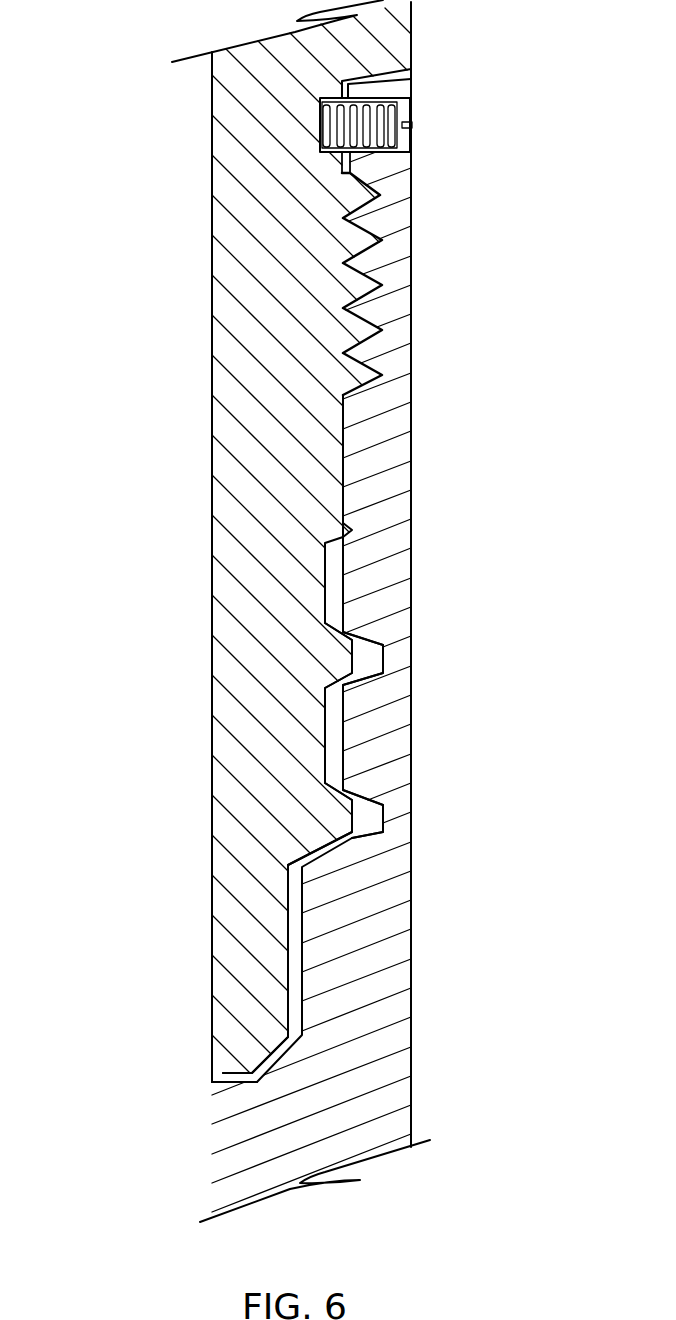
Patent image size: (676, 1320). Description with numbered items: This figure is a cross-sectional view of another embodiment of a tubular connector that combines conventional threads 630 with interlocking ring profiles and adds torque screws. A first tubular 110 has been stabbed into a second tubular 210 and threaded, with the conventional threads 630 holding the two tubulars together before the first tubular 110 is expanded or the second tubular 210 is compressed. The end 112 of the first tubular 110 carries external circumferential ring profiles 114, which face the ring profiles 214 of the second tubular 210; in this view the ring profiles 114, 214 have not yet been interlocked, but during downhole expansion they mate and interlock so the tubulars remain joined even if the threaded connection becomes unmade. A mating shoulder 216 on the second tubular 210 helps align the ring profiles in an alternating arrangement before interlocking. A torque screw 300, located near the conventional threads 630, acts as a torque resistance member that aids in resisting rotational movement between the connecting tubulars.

The first tubular 110 is at (270, 327).
The end of the first tubular 112 is at (263, 1098).
The external circumferential ring profiles 114 is at (347, 655).
The second tubular 210 is at (363, 1023).
The ring profiles of the second tubular 214 is at (387, 658).
The mating shoulder 216 is at (223, 1080).
The torque screw 300 is at (382, 132).
The conventional threads 630 is at (386, 378).